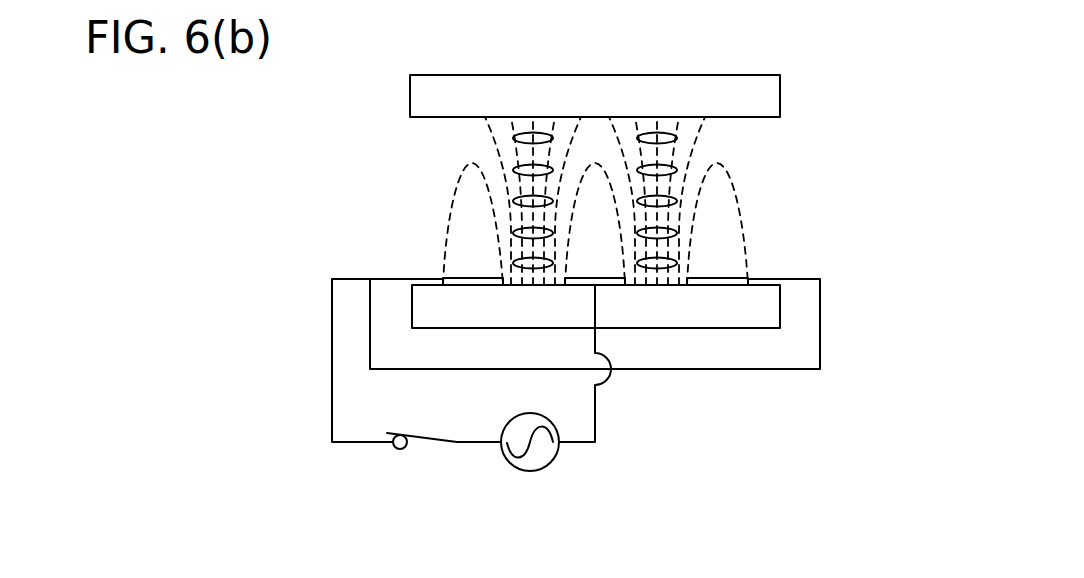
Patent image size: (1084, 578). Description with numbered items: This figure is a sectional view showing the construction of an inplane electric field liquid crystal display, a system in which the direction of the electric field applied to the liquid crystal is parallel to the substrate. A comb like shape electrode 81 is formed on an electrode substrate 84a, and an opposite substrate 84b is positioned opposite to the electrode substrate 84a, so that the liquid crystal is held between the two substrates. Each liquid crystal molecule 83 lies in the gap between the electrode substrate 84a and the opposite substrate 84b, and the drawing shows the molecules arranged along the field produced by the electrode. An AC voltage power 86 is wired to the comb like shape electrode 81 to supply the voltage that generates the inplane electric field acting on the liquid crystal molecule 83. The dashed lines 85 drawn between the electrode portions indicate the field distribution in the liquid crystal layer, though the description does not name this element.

The opposite substrate 84b is at (765, 98).
The electrode substrate 84a is at (765, 303).
The comb like shape electrode 81 is at (716, 279).
The liquid crystal molecule 83 is at (662, 138).
The electric line of force 85 is at (740, 205).
The AC voltage power 86 is at (542, 460).